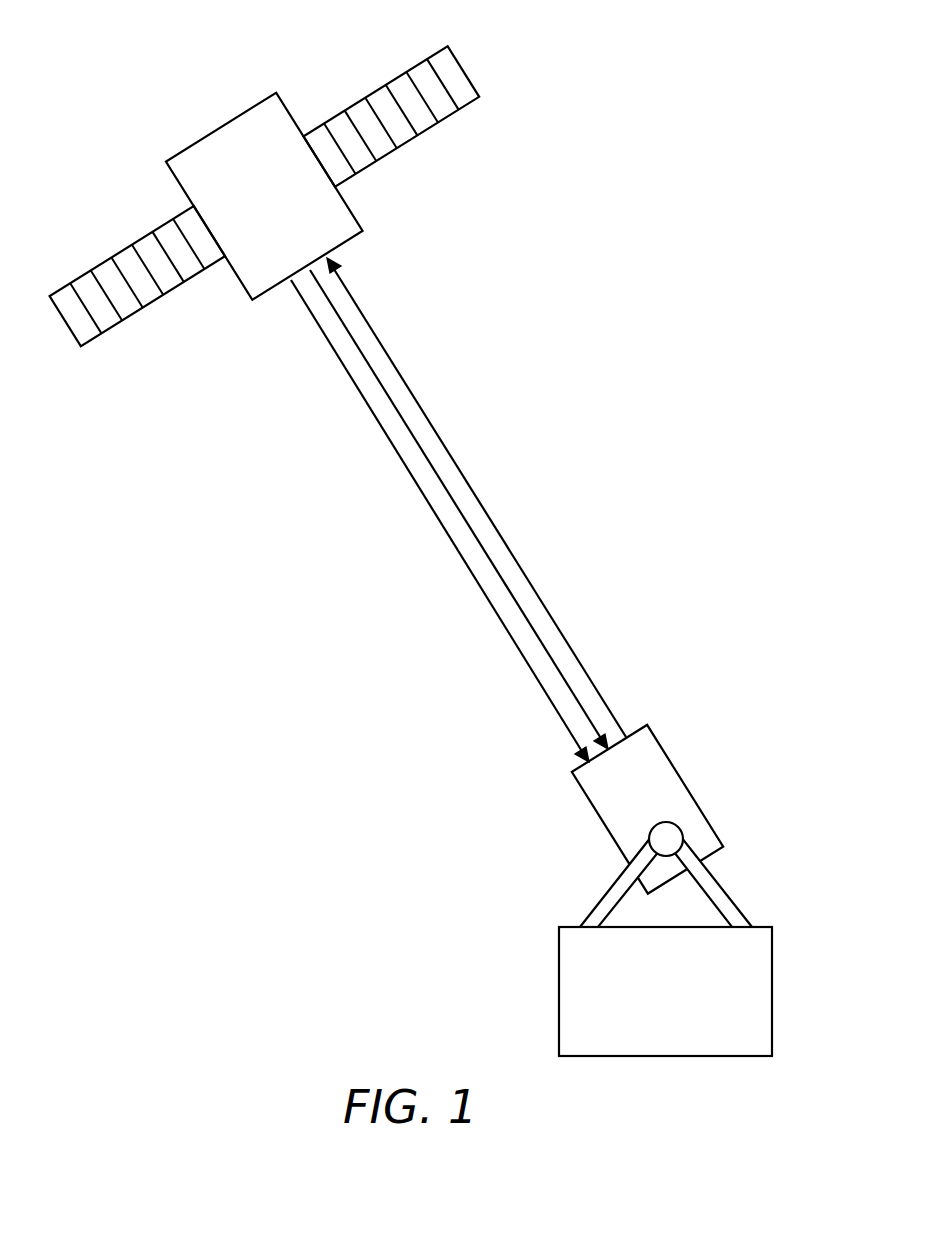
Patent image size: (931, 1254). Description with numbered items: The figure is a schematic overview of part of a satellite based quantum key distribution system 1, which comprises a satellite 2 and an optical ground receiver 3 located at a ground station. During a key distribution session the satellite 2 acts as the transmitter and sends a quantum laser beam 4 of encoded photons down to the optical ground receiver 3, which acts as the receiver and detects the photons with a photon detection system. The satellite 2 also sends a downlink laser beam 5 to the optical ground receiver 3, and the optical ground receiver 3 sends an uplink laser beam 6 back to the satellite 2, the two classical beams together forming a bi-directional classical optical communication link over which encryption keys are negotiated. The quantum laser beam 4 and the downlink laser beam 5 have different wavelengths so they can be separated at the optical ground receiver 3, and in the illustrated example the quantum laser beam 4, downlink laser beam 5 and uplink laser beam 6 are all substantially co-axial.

The satellite based quantum key distribution system 1 is at (641, 239).
The satellite 2 is at (197, 140).
The optical ground receiver 3 is at (663, 740).
The quantum laser beam 4 is at (405, 468).
The downlink laser beam 5 is at (470, 523).
The uplink laser beam 6 is at (418, 402).